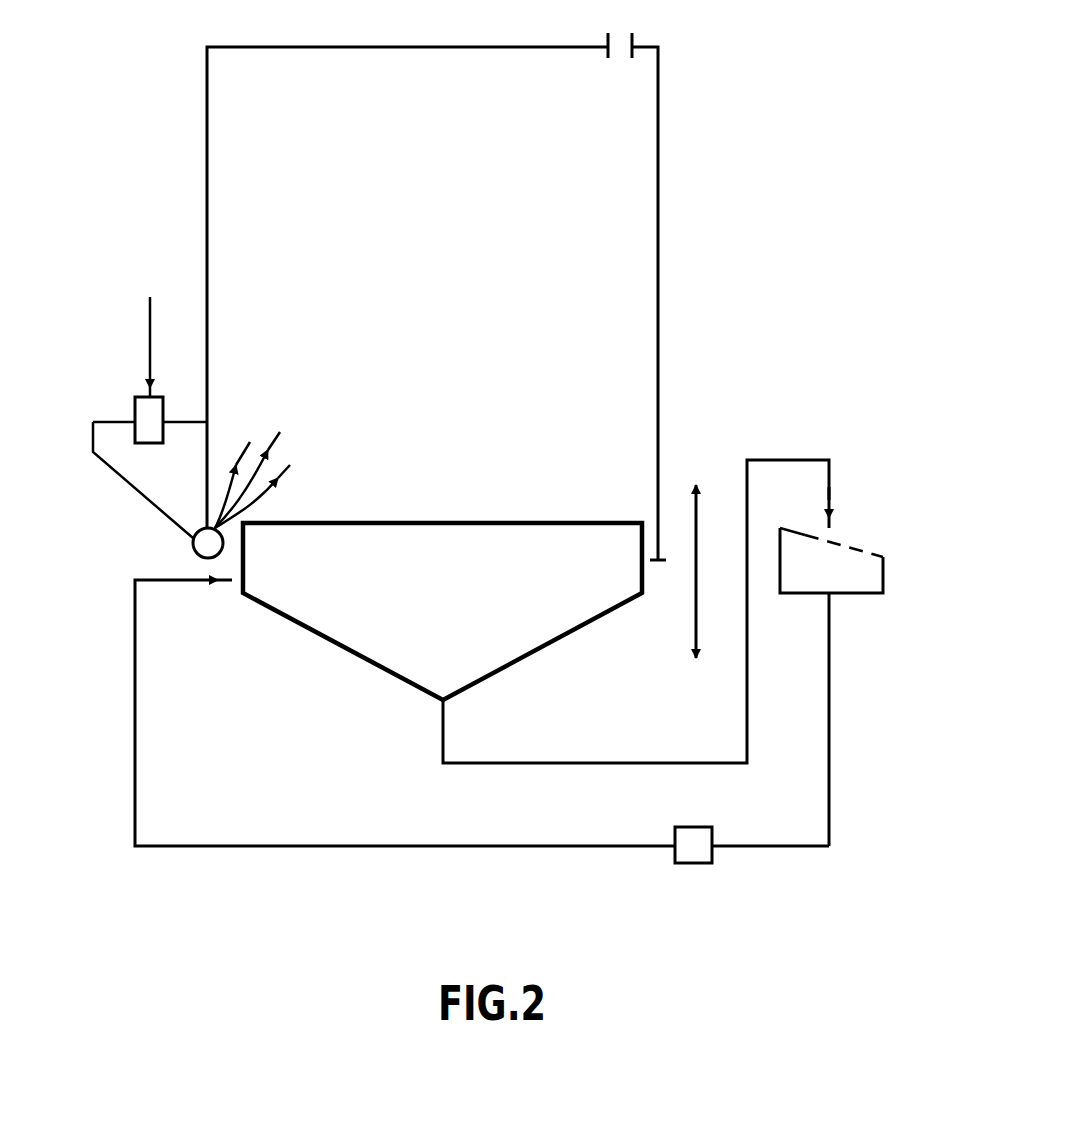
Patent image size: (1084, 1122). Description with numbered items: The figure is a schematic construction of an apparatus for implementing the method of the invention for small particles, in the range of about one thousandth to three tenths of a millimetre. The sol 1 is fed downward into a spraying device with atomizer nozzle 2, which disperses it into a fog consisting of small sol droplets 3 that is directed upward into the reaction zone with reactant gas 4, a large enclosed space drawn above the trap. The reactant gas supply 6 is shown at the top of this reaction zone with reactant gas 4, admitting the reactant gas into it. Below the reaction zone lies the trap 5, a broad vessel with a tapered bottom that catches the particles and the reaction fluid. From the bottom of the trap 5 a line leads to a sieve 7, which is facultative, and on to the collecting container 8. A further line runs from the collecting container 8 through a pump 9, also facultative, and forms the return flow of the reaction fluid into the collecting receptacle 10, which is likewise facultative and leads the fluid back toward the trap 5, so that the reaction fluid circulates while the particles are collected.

The sol 1 is at (152, 316).
The spraying device with atomizer nozzle 2 is at (135, 400).
The fog consisting of small sol droplets 3 is at (272, 498).
The reaction zone with reactant gas 4 is at (450, 258).
The trap 5 is at (461, 618).
The reactant gas supply 6 is at (618, 45).
The sieve 7 is at (832, 490).
The collecting container 8 is at (883, 577).
The pump 9 is at (712, 855).
The return flow of the reaction fluid into the collecting receptacle 10 is at (455, 848).